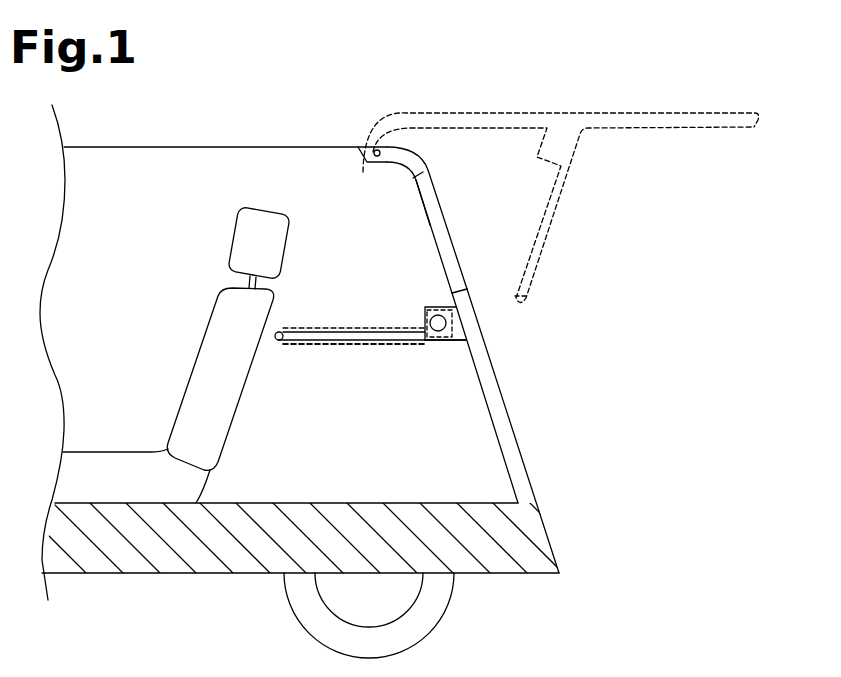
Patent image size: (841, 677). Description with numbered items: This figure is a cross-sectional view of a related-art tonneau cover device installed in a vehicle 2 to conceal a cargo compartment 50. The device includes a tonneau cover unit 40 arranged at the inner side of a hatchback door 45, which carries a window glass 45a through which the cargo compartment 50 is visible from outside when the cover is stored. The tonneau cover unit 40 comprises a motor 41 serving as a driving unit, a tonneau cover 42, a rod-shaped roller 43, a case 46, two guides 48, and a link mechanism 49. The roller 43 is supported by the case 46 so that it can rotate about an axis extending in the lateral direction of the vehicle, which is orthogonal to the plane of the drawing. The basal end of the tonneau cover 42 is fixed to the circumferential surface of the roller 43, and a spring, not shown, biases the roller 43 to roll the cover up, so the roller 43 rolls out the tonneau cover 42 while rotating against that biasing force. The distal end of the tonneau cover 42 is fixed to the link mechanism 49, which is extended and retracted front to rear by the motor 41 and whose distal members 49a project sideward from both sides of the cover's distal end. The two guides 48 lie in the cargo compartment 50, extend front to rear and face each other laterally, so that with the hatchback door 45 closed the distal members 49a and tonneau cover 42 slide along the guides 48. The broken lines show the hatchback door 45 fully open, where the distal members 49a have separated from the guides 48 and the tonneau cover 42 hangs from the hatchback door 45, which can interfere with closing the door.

The vehicle 2 is at (285, 146).
The tonneau cover unit 40 is at (403, 367).
The motor 41 is at (426, 306).
The tonneau cover 42 is at (562, 192).
The roller 43 is at (452, 318).
The hatchback door 45 is at (435, 186).
The window glass 45a is at (436, 213).
The case 46 is at (432, 343).
The guides 48 is at (333, 346).
The link mechanism 49 is at (315, 330).
The distal members 49a is at (278, 341).
The cargo compartment 50 is at (465, 420).